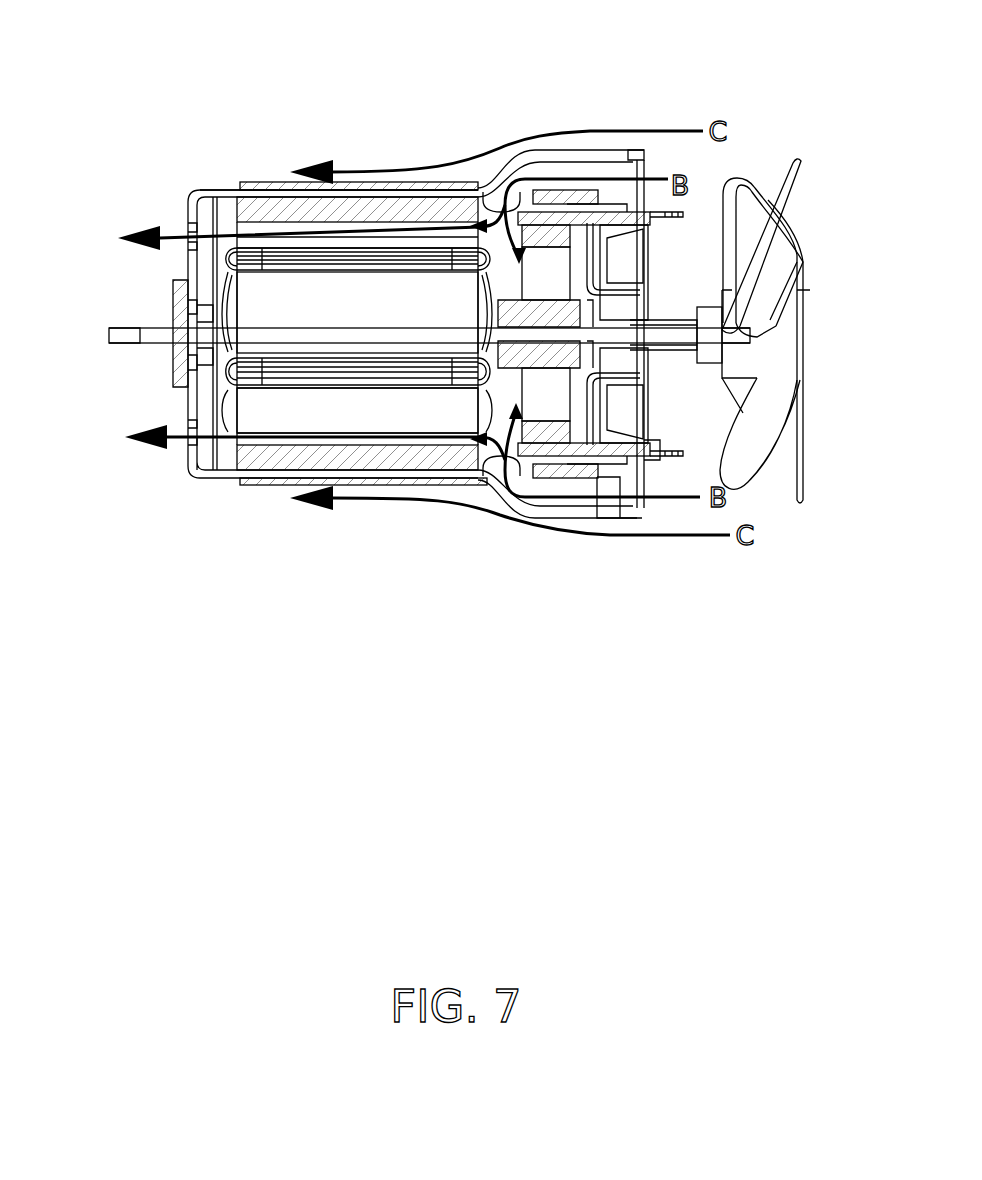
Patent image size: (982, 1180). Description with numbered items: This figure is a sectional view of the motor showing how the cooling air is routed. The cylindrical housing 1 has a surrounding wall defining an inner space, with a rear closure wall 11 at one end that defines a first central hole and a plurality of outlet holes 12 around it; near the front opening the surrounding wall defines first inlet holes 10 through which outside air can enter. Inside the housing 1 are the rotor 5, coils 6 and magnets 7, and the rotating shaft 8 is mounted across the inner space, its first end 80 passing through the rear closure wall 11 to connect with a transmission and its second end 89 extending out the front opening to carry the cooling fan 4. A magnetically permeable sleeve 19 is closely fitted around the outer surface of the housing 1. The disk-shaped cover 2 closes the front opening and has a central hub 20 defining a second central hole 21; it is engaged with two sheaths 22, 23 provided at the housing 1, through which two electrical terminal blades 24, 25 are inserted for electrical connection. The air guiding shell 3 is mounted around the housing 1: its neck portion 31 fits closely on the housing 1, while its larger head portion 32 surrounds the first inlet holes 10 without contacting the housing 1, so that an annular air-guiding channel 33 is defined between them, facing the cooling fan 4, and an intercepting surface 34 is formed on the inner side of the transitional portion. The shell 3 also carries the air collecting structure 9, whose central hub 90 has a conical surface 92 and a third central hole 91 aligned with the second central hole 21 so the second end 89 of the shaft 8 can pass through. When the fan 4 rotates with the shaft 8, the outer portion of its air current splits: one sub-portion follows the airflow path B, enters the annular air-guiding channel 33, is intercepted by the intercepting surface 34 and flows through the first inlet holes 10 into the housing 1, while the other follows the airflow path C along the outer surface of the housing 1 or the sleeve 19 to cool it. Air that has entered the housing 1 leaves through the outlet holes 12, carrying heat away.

The housing 1 is at (230, 477).
The cover 2 is at (597, 478).
The air guiding shell 3 is at (533, 148).
The cooling fan 4 is at (800, 495).
The rotor 5 is at (257, 338).
The coils 6 is at (237, 372).
The magnets 7 is at (378, 472).
The rotating shaft 8 is at (640, 262).
The air collecting structure 9 is at (777, 440).
The first inlet holes 10 is at (497, 182).
The rear closure wall 11 is at (187, 262).
The outlet holes 12 is at (187, 232).
The magnetically permeable sleeve 19 is at (278, 486).
The central hub 20 is at (612, 283).
The second central hole 21 is at (600, 318).
The sheath 22 is at (613, 458).
The sheath 23 is at (628, 156).
The electrical terminal blade 24 is at (657, 460).
The electrical terminal blade 25 is at (665, 200).
The neck portion 31 is at (435, 180).
The head portion 32 is at (630, 158).
The annular air-guiding channel 33 is at (640, 165).
The intercepting surface 34 is at (455, 182).
The first end 80 is at (142, 335).
The second end 89 is at (690, 330).
The central hub 90 is at (655, 358).
The third central hole 91 is at (670, 333).
The conical surface 92 is at (652, 365).